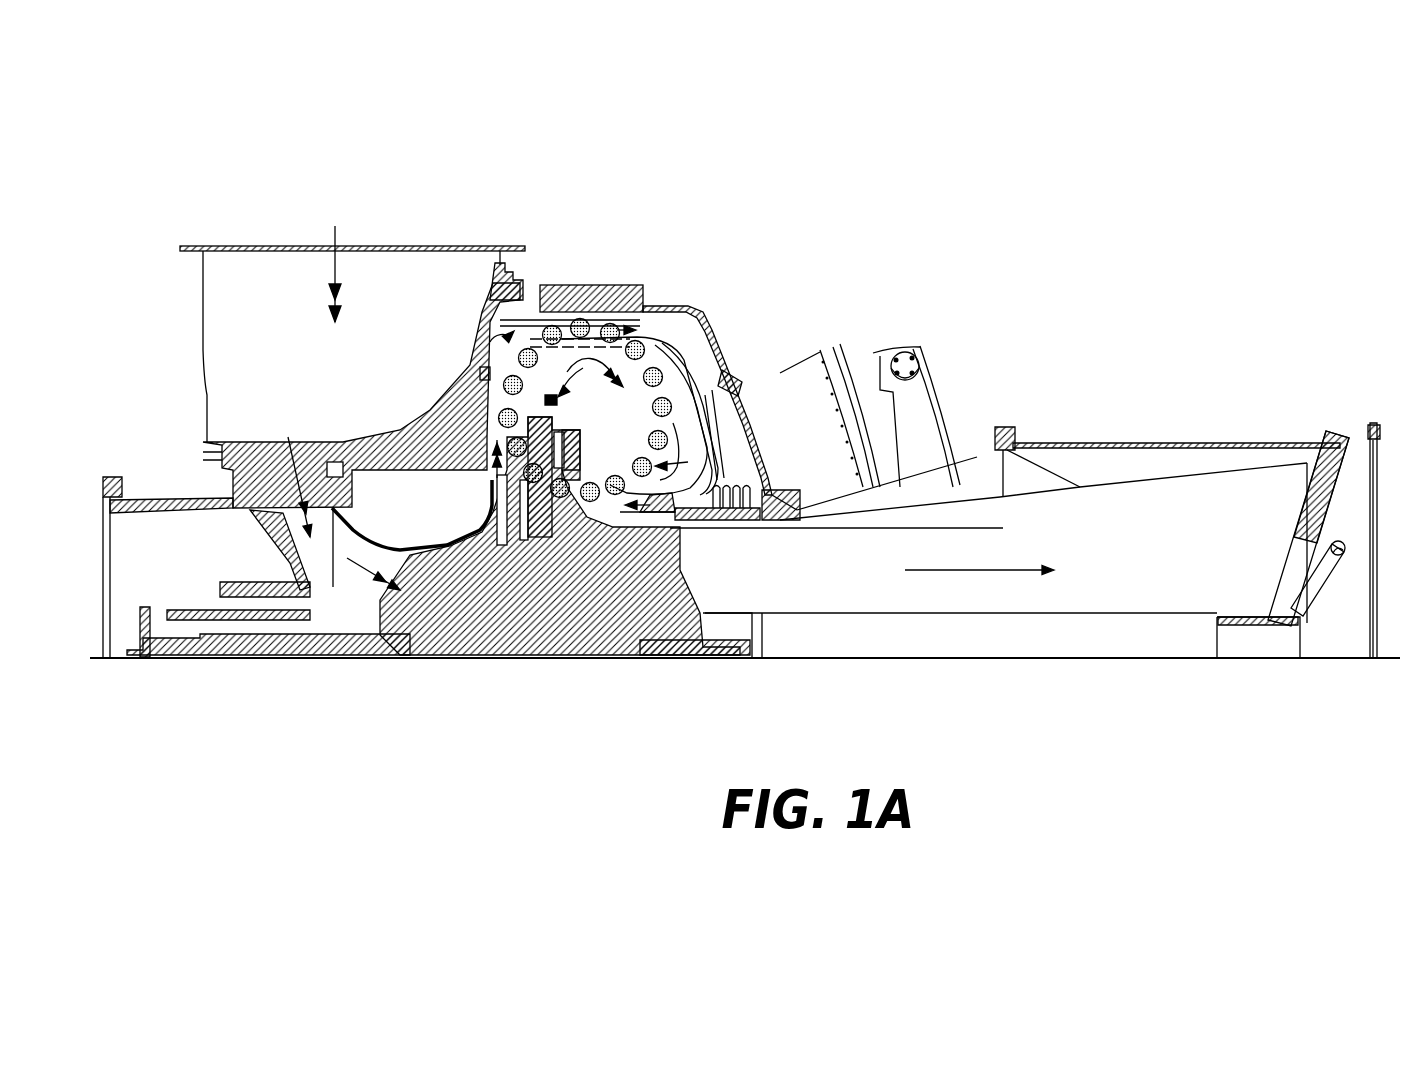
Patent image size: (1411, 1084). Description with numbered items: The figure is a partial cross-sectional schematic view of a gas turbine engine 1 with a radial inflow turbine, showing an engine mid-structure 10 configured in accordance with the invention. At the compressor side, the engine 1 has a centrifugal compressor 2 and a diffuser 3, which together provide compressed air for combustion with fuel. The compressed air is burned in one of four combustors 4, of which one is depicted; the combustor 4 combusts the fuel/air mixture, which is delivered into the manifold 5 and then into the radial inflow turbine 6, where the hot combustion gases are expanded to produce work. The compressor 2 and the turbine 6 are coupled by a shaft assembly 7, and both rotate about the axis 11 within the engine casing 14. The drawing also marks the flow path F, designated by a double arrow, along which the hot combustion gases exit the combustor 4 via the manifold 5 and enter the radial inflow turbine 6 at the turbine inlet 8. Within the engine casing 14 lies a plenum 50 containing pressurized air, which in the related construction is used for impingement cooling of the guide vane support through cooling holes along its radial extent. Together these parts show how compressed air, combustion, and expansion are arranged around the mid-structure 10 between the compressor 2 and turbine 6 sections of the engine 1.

The gas turbine engine 1 is at (428, 216).
The centrifugal compressor 2 is at (448, 542).
The diffuser 3 is at (488, 380).
The combustor 4 is at (868, 360).
The manifold 5 is at (681, 380).
The radial inflow turbine 6 is at (682, 572).
The shaft assembly 7 is at (478, 660).
The turbine inlet 8 is at (570, 455).
The mid-structure 10 is at (590, 303).
The axis 11 is at (1391, 658).
The engine casing 14 is at (681, 309).
The plenum 50 is at (608, 483).
The flow path F is at (607, 345).